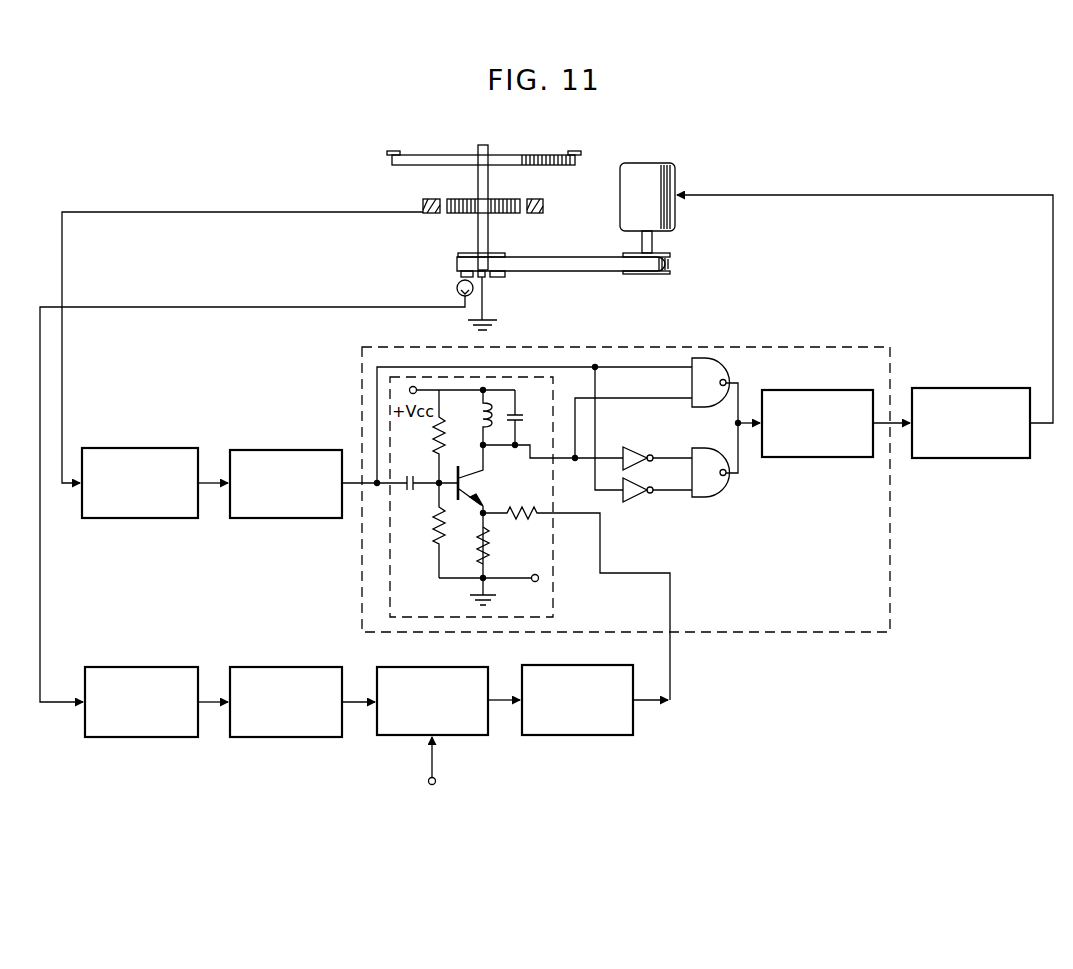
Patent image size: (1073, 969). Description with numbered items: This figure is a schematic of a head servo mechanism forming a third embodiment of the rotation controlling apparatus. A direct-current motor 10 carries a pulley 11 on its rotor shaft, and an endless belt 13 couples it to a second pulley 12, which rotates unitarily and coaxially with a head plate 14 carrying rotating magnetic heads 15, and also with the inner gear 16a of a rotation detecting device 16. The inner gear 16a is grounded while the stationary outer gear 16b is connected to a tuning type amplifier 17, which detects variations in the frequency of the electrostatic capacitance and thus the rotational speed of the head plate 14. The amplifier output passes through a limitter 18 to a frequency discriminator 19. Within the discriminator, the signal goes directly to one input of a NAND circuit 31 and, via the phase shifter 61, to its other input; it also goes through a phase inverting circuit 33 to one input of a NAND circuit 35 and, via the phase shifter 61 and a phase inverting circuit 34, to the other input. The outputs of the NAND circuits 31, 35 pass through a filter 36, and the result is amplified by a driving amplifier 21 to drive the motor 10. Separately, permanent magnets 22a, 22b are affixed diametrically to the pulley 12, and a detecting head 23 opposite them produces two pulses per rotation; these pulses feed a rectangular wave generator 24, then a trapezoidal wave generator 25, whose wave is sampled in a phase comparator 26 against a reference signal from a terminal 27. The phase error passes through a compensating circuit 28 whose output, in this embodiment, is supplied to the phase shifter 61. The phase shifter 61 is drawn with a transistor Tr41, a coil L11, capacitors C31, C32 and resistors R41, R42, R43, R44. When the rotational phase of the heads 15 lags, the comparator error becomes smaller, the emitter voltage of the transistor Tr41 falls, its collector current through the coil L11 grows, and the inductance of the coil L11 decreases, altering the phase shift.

The DC motor 10 is at (673, 180).
The pulley 11 is at (665, 255).
The pulley 12 is at (498, 254).
The endless belt 13 is at (576, 271).
The head plate 14 is at (440, 155).
The rotating magnetic heads 15 is at (388, 152).
The rotation detecting device 16 is at (509, 196).
The inner gear 16a is at (462, 214).
The outer gear 16b is at (541, 214).
The tuning type amplifier 17 is at (123, 448).
The limitter 18 is at (263, 450).
The frequency discriminator 19 is at (763, 347).
The driving amplifier 21 is at (947, 388).
The permanent magnet 22a is at (460, 276).
The permanent magnet 22b is at (501, 277).
The detecting head 23 is at (458, 291).
The rectangular wave generator 24 is at (152, 667).
The trapezoidal wave generator 25 is at (263, 667).
The phase comparator 26 is at (457, 735).
The terminal 27 is at (428, 780).
The compensating circuit 28 is at (577, 735).
The NAND circuit 31 is at (710, 360).
The phase inverting circuit 33 is at (628, 447).
The phase inverting circuit 34 is at (628, 502).
The NAND circuit 35 is at (712, 494).
The filter 36 is at (795, 390).
The phase shifter 61 is at (390, 388).
The capacitor C31 is at (424, 500).
The capacitor C32 is at (529, 417).
The coil L11 is at (472, 417).
The resistor R41 is at (423, 436).
The resistor R42 is at (437, 540).
The resistor R43 is at (499, 550).
The resistor R44 is at (576, 596).
The transistor Tr41 is at (485, 511).